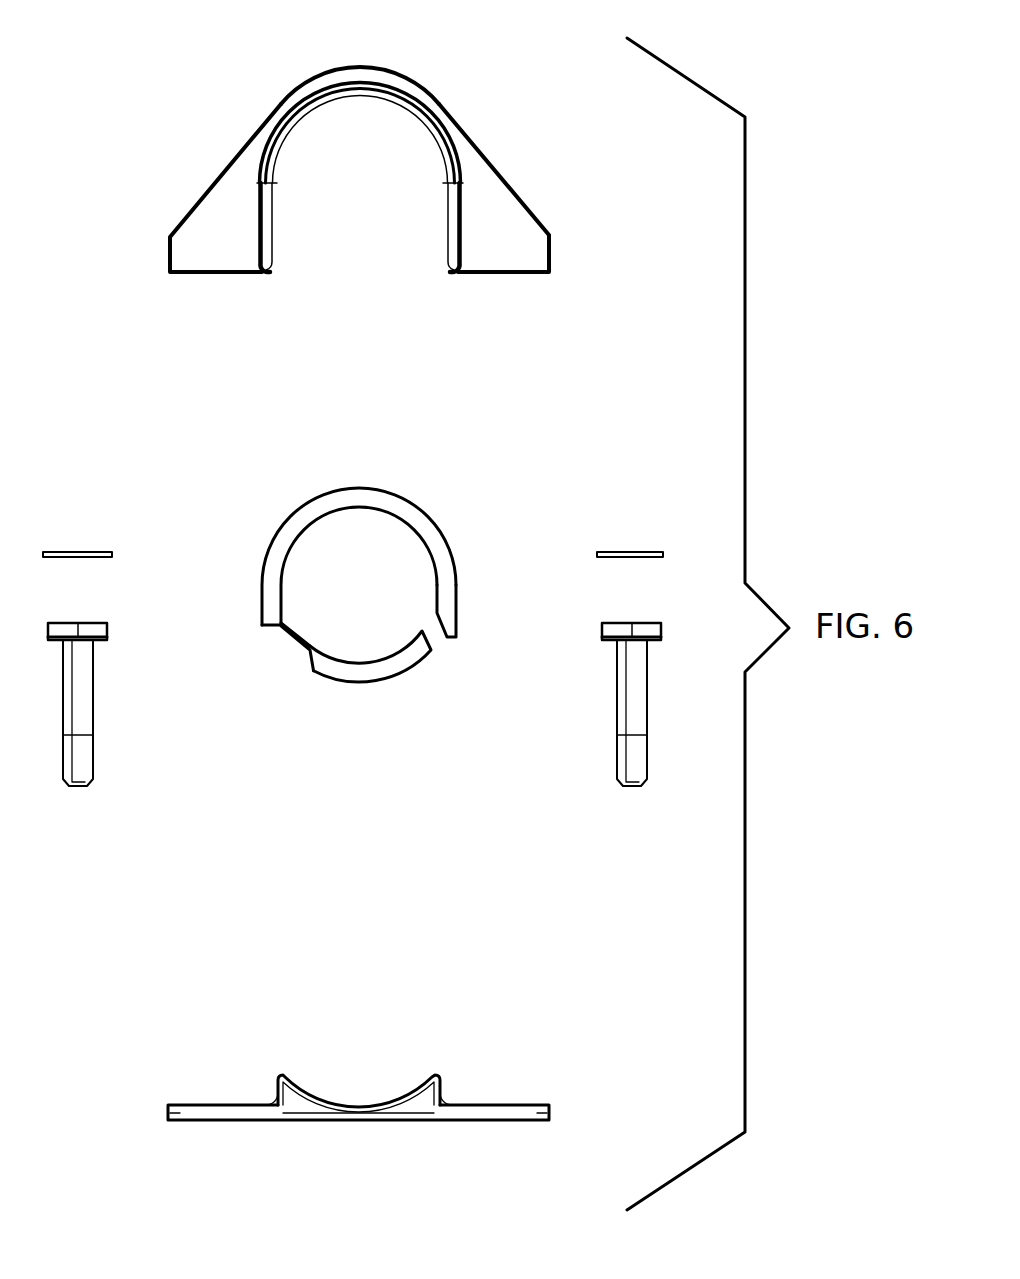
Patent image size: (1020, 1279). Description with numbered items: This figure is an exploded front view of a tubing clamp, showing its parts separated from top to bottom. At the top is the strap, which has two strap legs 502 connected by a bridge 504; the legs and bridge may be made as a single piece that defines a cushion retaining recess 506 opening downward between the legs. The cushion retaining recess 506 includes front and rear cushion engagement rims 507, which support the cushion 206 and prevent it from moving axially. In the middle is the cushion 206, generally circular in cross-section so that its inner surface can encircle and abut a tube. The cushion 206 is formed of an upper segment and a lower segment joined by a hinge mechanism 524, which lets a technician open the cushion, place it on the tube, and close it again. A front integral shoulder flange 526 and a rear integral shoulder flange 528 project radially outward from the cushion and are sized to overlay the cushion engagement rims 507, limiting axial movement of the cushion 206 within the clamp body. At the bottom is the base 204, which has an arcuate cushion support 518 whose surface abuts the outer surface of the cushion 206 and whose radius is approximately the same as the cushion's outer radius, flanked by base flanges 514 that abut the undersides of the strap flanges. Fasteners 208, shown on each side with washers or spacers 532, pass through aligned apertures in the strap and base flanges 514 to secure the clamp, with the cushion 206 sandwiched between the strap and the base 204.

The bridge 504 is at (364, 67).
The front cushion engagement rim 507 is at (410, 118).
The cushion retaining recess 506 is at (353, 242).
The strap leg 502 is at (215, 240).
The cushion 206 is at (367, 576).
The front integral shoulder flange 526 is at (458, 602).
The hinge mechanism 524 is at (302, 643).
The rear integral shoulder flange 528 is at (391, 676).
The washers or spacers 532 is at (83, 551).
The fasteners 208 is at (63, 728).
The base 204 is at (364, 1049).
The cushion support 518 is at (368, 1098).
The base flange 514 is at (168, 1113).